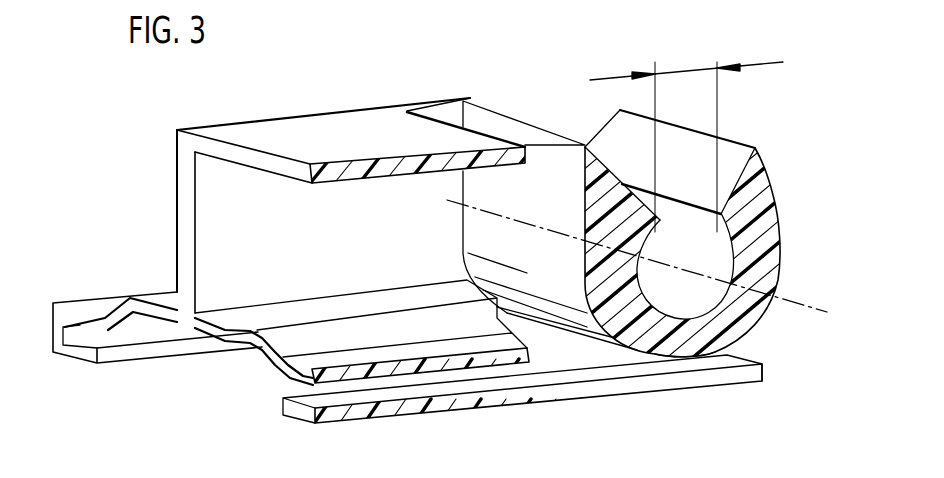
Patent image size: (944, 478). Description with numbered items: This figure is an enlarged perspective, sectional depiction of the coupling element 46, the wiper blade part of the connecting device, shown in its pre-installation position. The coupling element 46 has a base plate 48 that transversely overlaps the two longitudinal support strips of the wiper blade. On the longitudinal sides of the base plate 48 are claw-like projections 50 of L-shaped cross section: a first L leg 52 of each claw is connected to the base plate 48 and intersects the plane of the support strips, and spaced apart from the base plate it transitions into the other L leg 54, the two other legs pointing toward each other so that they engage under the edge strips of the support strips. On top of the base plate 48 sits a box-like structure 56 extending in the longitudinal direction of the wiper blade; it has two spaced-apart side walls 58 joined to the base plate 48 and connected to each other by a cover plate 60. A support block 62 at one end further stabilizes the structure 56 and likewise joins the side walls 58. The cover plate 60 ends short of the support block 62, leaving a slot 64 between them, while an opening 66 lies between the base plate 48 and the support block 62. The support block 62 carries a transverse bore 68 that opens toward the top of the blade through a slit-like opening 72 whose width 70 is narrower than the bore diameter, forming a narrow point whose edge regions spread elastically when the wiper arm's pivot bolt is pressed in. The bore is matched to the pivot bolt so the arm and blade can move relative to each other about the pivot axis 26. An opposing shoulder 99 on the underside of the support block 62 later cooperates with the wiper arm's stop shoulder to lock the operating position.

The pivot axis 26 is at (798, 306).
The coupling element 46 is at (331, 165).
The base plate 48 is at (224, 330).
The claw-like projections 50 is at (424, 359).
The first L leg 52 is at (65, 331).
The other L leg 54 is at (170, 350).
The box-like structure 56 is at (136, 217).
The side walls 58 is at (182, 227).
The cover plate 60 is at (307, 133).
The support block 62 is at (683, 239).
The slot 64 is at (485, 127).
The opening 66 is at (570, 338).
The transverse bore 68 is at (700, 255).
The width 70 is at (688, 68).
The slit-like opening 72 is at (681, 230).
The opposing shoulder 99 is at (682, 357).